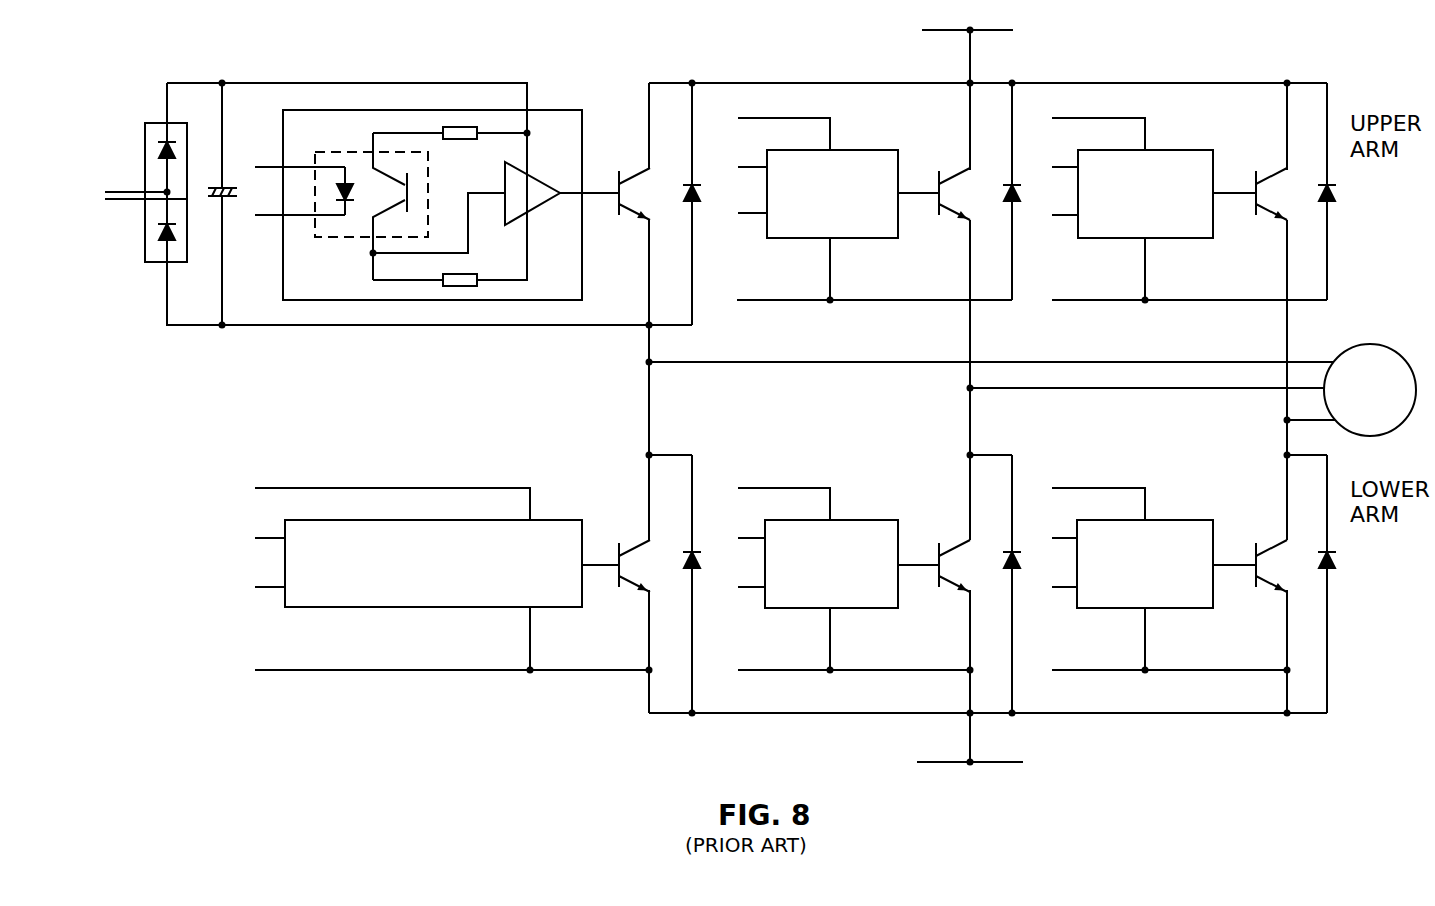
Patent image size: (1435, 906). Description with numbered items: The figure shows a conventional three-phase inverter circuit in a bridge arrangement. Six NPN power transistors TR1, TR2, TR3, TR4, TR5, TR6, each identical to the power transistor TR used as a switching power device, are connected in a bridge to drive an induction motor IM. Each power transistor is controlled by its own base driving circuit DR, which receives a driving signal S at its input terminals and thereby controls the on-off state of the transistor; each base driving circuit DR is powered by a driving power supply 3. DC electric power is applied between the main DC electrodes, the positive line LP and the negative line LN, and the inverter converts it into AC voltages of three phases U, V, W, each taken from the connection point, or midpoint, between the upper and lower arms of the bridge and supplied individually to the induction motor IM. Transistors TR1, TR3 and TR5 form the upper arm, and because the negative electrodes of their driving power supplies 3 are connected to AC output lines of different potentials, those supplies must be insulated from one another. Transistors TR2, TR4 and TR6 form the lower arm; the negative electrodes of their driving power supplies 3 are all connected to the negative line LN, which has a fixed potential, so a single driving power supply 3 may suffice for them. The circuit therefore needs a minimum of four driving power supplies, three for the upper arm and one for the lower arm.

The driving power supply 3 is at (218, 183).
The base driving circuit DR is at (558, 108).
The power transistor TR is at (634, 72).
The power transistor TR1 is at (637, 171).
The power transistor TR2 is at (637, 549).
The power transistor TR3 is at (952, 171).
The power transistor TR4 is at (952, 549).
The power transistor TR5 is at (1268, 172).
The power transistor TR6 is at (1268, 549).
The driving signal S is at (661, 377).
The positive line LP is at (946, 21).
The negative line LN is at (950, 773).
The U phase AC voltage U is at (990, 350).
The V phase AC voltage V is at (1146, 377).
The W phase AC voltage W is at (1310, 409).
The induction motor IM is at (1370, 390).